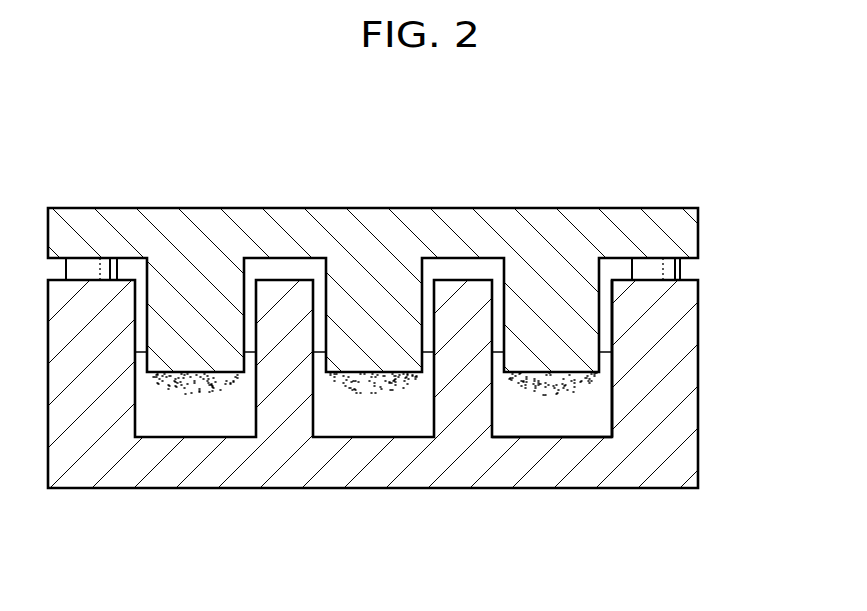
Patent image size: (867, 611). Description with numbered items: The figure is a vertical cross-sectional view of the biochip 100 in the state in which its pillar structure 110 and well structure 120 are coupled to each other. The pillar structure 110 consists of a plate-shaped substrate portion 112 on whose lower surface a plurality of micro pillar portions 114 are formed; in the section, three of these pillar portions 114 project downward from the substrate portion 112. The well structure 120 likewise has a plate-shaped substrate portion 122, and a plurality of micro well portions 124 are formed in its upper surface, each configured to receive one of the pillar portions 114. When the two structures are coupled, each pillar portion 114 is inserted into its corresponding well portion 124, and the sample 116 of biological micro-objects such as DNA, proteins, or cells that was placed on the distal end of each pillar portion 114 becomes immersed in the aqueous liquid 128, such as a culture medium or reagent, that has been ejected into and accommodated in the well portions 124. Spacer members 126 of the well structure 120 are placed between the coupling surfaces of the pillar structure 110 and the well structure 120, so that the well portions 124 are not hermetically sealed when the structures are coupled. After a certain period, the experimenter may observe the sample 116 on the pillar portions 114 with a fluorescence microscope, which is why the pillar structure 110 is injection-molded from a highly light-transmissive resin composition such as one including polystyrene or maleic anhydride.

The biochip 100 is at (141, 112).
The pillar structure 110 is at (368, 193).
The substrate portion 112 is at (693, 227).
The pillar portions 114 is at (600, 306).
The sample 116 is at (580, 382).
The well structure 120 is at (330, 510).
The substrate portion 122 is at (697, 347).
The well portions 124 is at (609, 416).
The spacer members 126 is at (678, 267).
The aqueous liquid 128 is at (553, 418).